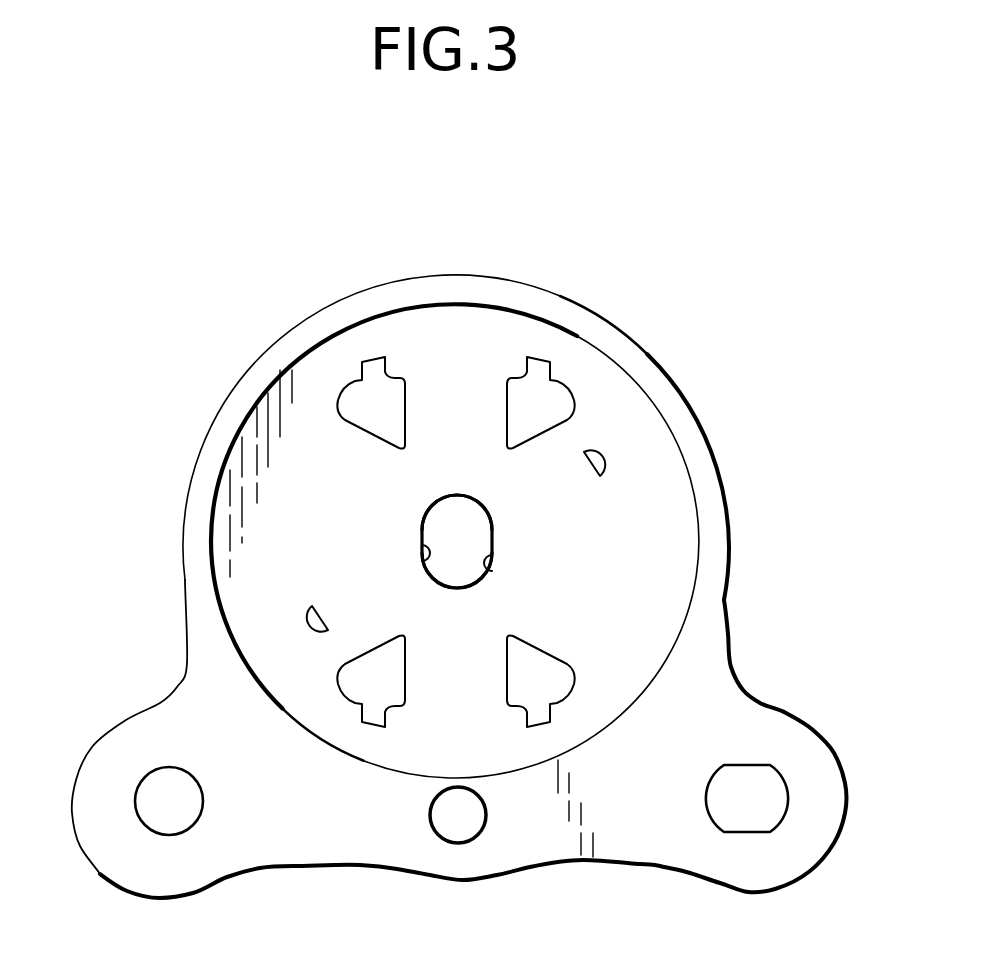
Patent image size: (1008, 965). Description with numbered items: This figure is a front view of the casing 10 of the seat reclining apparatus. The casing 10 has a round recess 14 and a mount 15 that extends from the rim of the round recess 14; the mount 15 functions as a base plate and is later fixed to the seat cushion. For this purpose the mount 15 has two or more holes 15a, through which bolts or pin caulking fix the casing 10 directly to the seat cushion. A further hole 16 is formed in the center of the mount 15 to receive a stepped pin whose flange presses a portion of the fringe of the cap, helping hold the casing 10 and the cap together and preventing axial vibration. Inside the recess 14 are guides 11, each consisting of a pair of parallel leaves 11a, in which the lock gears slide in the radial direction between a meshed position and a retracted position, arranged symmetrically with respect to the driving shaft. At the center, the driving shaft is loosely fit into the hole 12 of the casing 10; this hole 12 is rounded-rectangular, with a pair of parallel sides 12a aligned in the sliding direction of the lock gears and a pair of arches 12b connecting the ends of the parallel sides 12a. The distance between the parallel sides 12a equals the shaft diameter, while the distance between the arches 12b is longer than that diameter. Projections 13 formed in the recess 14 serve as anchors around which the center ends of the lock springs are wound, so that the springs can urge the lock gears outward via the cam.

The casing 10 is at (666, 348).
The guide 11 is at (375, 365).
The parallel leaves 11a is at (410, 388).
The hole 12 is at (500, 531).
The parallel sides 12a is at (420, 550).
The arches 12b is at (422, 507).
The projection 13 is at (607, 463).
The round recess 14 is at (313, 348).
The mount 15 is at (662, 847).
The holes 15a is at (152, 812).
The hole 16 is at (445, 812).